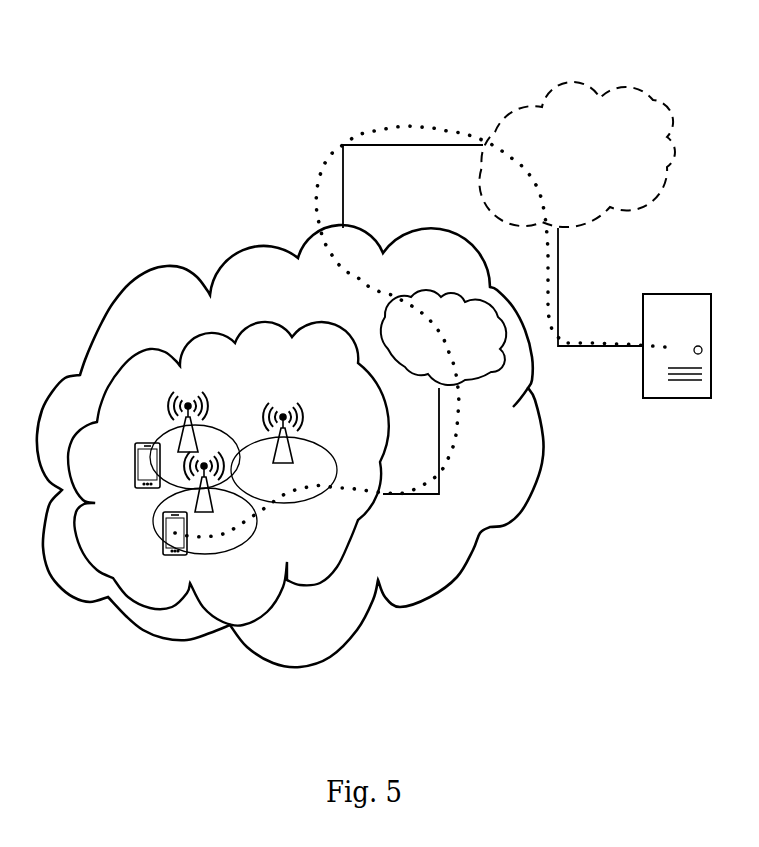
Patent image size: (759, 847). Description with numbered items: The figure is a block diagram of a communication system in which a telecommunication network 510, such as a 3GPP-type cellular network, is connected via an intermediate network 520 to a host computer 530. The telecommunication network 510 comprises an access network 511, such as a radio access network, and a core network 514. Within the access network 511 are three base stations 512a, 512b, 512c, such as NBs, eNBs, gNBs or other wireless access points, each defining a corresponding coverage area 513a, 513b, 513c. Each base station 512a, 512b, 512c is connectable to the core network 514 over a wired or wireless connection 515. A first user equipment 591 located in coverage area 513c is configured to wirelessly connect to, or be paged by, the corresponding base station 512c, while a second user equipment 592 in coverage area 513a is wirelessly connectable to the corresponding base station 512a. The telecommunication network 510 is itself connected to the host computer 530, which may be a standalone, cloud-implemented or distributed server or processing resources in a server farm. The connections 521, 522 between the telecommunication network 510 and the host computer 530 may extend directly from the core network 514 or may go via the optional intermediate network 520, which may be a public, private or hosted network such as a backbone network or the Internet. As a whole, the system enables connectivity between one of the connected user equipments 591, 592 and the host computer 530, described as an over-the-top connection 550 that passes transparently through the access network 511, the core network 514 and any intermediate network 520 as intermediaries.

The telecommunication network 510 is at (280, 288).
The access network 511 is at (237, 376).
The base station 512a is at (213, 512).
The base station 512b is at (302, 417).
The base station 512c is at (167, 408).
The coverage area 513a is at (256, 521).
The coverage area 513b is at (337, 478).
The coverage area 513c is at (158, 445).
The core network 514 is at (458, 346).
The connection 515 is at (438, 423).
The intermediate network 520 is at (572, 155).
The connection 521 is at (403, 145).
The connection 522 is at (598, 349).
The host computer 530 is at (677, 360).
The OTT connection 550 is at (325, 163).
The first user equipment 591 is at (137, 488).
The second user equipment 592 is at (163, 555).